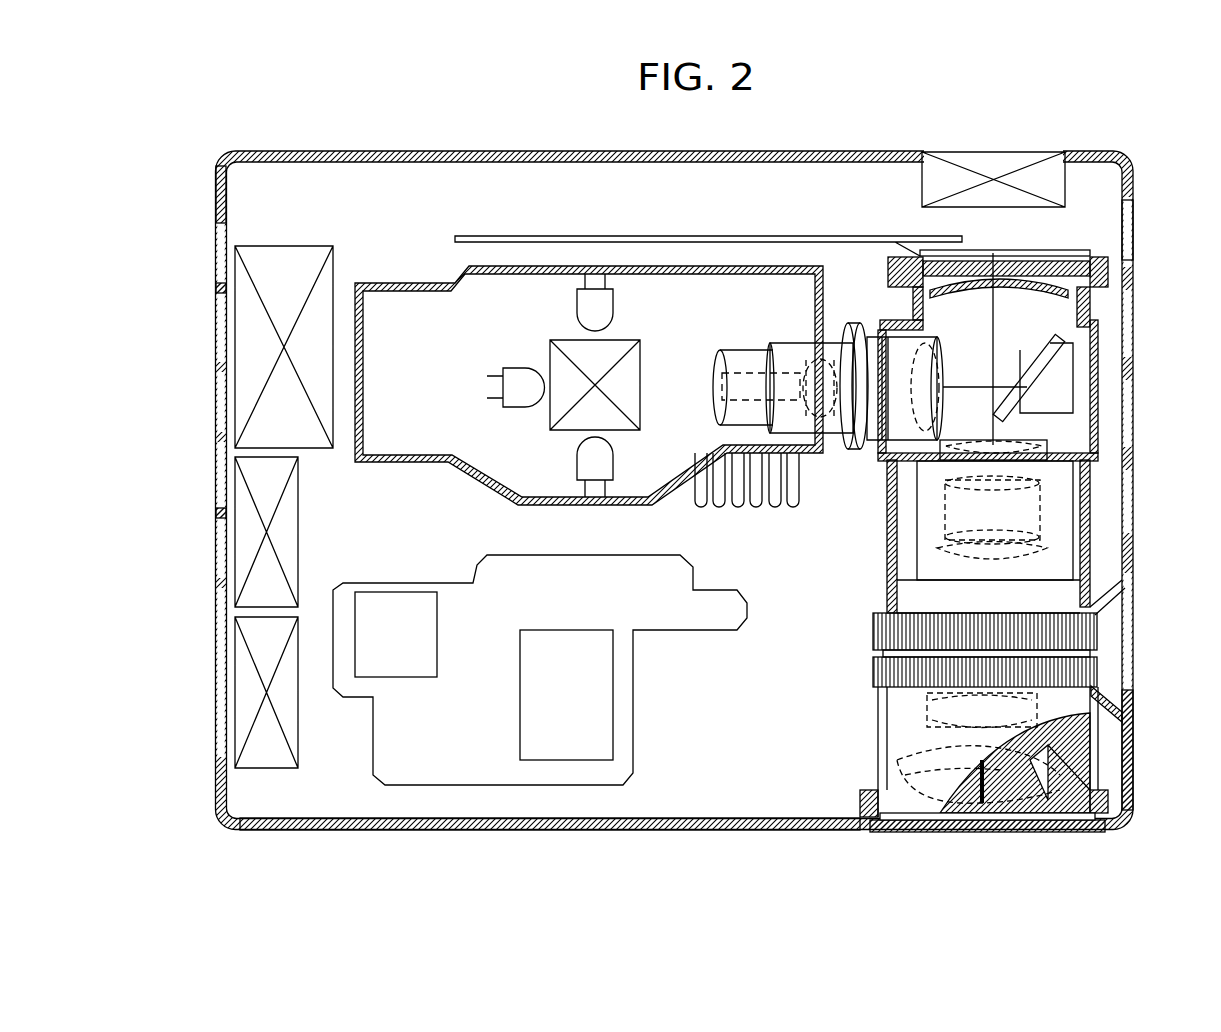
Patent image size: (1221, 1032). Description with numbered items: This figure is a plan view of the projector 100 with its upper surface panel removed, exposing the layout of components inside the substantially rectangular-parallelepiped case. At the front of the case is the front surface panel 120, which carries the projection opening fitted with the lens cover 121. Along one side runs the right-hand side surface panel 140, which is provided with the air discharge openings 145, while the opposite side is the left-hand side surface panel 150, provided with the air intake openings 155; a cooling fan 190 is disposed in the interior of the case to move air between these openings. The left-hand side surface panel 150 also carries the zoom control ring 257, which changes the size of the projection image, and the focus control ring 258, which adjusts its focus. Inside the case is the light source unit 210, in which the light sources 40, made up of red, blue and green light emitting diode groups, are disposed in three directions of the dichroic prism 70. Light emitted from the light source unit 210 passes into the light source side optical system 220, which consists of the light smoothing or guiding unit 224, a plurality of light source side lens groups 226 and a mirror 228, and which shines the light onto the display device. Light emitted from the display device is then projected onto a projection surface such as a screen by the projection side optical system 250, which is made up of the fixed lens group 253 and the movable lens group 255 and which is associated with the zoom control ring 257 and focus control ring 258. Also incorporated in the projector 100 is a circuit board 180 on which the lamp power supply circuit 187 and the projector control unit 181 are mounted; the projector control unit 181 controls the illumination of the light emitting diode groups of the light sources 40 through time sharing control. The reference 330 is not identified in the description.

The projector 100 is at (1126, 151).
The front surface panel 120 is at (397, 831).
The lens cover 121 is at (988, 833).
The right-hand side surface panel 140 is at (215, 206).
The air discharge openings 145 is at (215, 308).
The left-hand side surface panel 150 is at (1133, 740).
The air intake openings 155 is at (1131, 234).
The circuit board 180 is at (486, 778).
The projector control unit 181 is at (565, 750).
The lamp power supply circuit 187 is at (363, 600).
The cooling fan 190 is at (236, 398).
The light source unit 210 is at (633, 328).
The light source side optical system 220 is at (788, 312).
The light smoothing or guiding unit 224 is at (747, 402).
The light source side lens groups 226 is at (826, 408).
The mirror 228 is at (1040, 368).
The projection side optical system 250 is at (1050, 549).
The fixed lens group 253 is at (1047, 446).
The movable lens group 255 is at (935, 521).
The zoom control ring 257 is at (1097, 632).
The focus control ring 258 is at (1097, 670).
The lens holder 330 is at (1030, 250).
The light sources 40 is at (576, 304).
The dichroic prism 70 is at (640, 350).